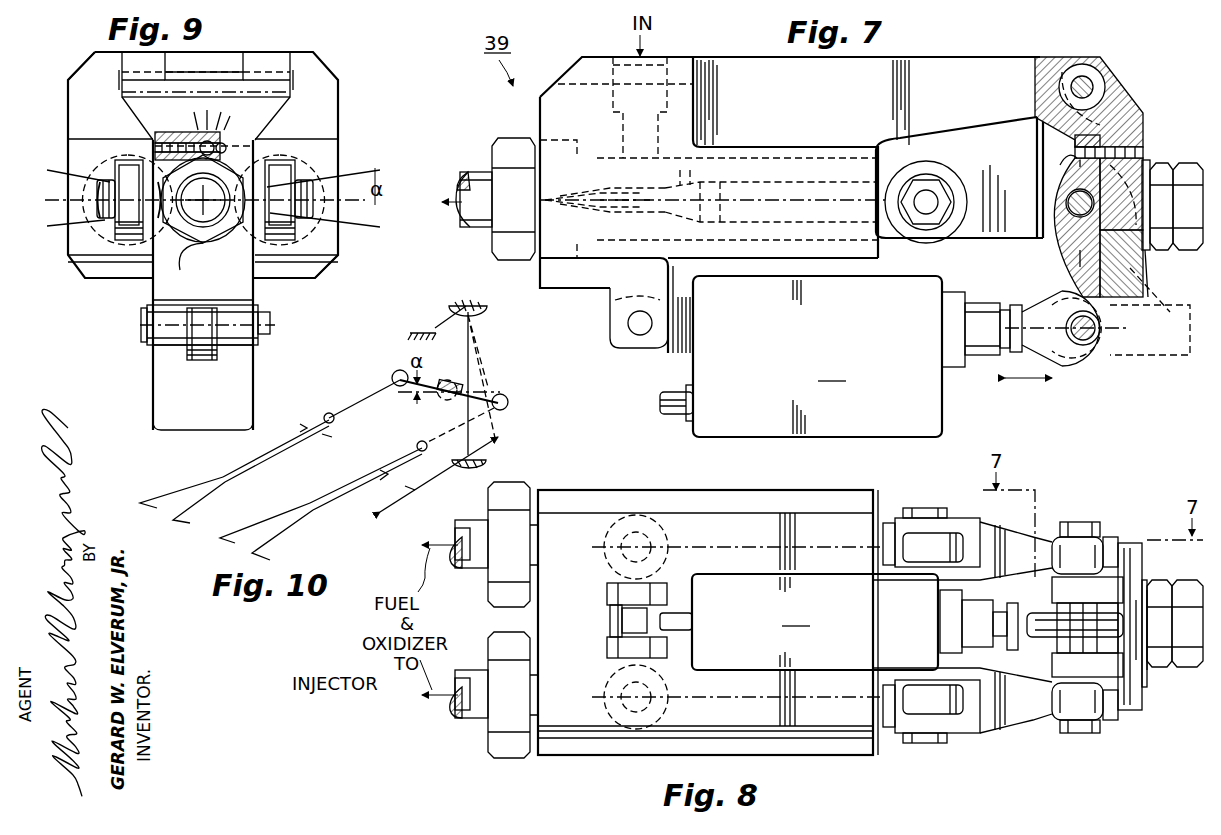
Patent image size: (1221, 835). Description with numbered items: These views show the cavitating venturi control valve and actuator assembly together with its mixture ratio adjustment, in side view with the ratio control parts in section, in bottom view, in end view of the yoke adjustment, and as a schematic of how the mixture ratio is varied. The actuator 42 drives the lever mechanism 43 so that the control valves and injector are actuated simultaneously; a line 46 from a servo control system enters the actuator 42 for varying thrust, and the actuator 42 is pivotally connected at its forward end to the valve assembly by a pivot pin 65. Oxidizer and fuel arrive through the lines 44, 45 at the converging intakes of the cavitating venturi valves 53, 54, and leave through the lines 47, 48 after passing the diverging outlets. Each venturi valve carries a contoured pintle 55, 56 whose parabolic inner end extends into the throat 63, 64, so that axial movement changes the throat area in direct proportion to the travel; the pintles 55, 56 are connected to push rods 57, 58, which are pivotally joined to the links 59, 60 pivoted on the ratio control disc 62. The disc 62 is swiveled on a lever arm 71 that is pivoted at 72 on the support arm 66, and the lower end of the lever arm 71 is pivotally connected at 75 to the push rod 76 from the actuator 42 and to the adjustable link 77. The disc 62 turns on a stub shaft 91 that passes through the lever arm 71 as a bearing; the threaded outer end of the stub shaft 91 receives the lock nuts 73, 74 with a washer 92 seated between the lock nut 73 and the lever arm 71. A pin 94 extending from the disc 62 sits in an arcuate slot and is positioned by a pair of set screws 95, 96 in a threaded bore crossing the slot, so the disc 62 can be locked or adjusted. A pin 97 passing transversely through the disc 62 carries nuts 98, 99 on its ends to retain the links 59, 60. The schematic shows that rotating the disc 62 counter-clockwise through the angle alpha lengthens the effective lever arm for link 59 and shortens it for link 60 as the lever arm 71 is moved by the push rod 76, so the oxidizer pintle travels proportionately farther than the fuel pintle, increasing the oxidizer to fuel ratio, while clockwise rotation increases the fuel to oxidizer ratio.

In FIG. 9, the actuator 42 is at (152, 392).
In FIG. 7, the actuator 42 is at (857, 356).
In FIG. 8, the actuator 42 is at (815, 622).
In FIG. 8, the lever mechanism 43 is at (1082, 494).
In FIG. 7, the line 44 is at (625, 58).
In FIG. 8, the line 44 is at (620, 540).
In FIG. 8, the line 45 is at (615, 700).
In FIG. 7, the line 46 is at (665, 392).
In FIG. 7, the line 47 is at (472, 174).
In FIG. 8, the line 47 is at (466, 569).
In FIG. 8, the line 48 is at (462, 720).
In FIG. 10, the cavitating venturi valve 53 is at (288, 440).
In FIG. 10, the cavitating venturi valve 54 is at (350, 492).
In FIG. 7, the cavitating venturi valve 54 is at (630, 192).
In FIG. 10, the contoured pintle 55 is at (300, 430).
In FIG. 10, the contoured pintle 56 is at (380, 472).
In FIG. 7, the contoured pintle 56 is at (678, 212).
In FIG. 10, the push rod 57 is at (325, 416).
In FIG. 8, the push rod 57 is at (888, 742).
In FIG. 10, the push rod 58 is at (418, 446).
In FIG. 7, the push rod 58 is at (900, 180).
In FIG. 8, the push rod 58 is at (886, 520).
In FIG. 9, the link 59 is at (285, 162).
In FIG. 10, the link 59 is at (375, 392).
In FIG. 7, the link 59 is at (1060, 240).
In FIG. 8, the link 59 is at (1015, 723).
In FIG. 9, the link 60 is at (125, 160).
In FIG. 10, the link 60 is at (503, 405).
In FIG. 7, the link 60 is at (1010, 182).
In FIG. 8, the link 60 is at (1010, 535).
In FIG. 9, the ratio control disc 62 is at (262, 280).
In FIG. 10, the ratio control disc 62 is at (452, 398).
In FIG. 7, the ratio control disc 62 is at (1062, 163).
In FIG. 8, the ratio control disc 62 is at (1056, 648).
In FIG. 10, the throat 63 is at (222, 480).
In FIG. 10, the throat 64 is at (296, 518).
In FIG. 7, the throat 64 is at (616, 207).
In FIG. 7, the pivot pin 65 is at (625, 312).
In FIG. 8, the pivot pin 65 is at (615, 585).
In FIG. 9, the support arm 66 is at (230, 55).
In FIG. 10, the support arm 66 is at (445, 318).
In FIG. 7, the support arm 66 is at (870, 101).
In FIG. 8, the support arm 66 is at (1010, 695).
In FIG. 9, the lever arm 71 is at (290, 70).
In FIG. 10, the lever arm 71 is at (470, 342).
In FIG. 7, the lever arm 71 is at (1128, 118).
In FIG. 8, the lever arm 71 is at (1135, 545).
In FIG. 9, the pivot 72 is at (293, 85).
In FIG. 7, the pivot 72 is at (1100, 85).
In FIG. 7, the lock nut 73 is at (1178, 162).
In FIG. 8, the lock nut 73 is at (1167, 574).
In FIG. 9, the lock nut 74 is at (185, 250).
In FIG. 7, the lock nut 74 is at (1192, 166).
In FIG. 8, the lock nut 74 is at (1194, 580).
In FIG. 9, the pivotal connection 75 is at (140, 325).
In FIG. 7, the pivotal connection 75 is at (1090, 340).
In FIG. 9, the push rod 76 is at (202, 360).
In FIG. 10, the push rod 76 is at (445, 478).
In FIG. 7, the push rod 76 is at (1027, 312).
In FIG. 8, the push rod 76 is at (1030, 620).
In FIG. 7, the adjustable link 77 is at (1185, 352).
In FIG. 9, the stub shaft 91 is at (215, 212).
In FIG. 10, the stub shaft 91 is at (456, 384).
In FIG. 7, the stub shaft 91 is at (1150, 175).
In FIG. 8, the stub shaft 91 is at (1165, 670).
In FIG. 7, the washer 92 is at (1150, 262).
In FIG. 8, the washer 92 is at (1146, 685).
In FIG. 9, the pin 94 is at (200, 132).
In FIG. 7, the pin 94 is at (1145, 152).
In FIG. 9, the set screw 95 is at (156, 140).
In FIG. 9, the set screw 96 is at (256, 146).
In FIG. 7, the pin 97 is at (1066, 258).
In FIG. 9, the nut 98 is at (98, 188).
In FIG. 8, the nut 98 is at (1085, 523).
In FIG. 9, the nut 99 is at (310, 190).
In FIG. 8, the nut 99 is at (1084, 727).